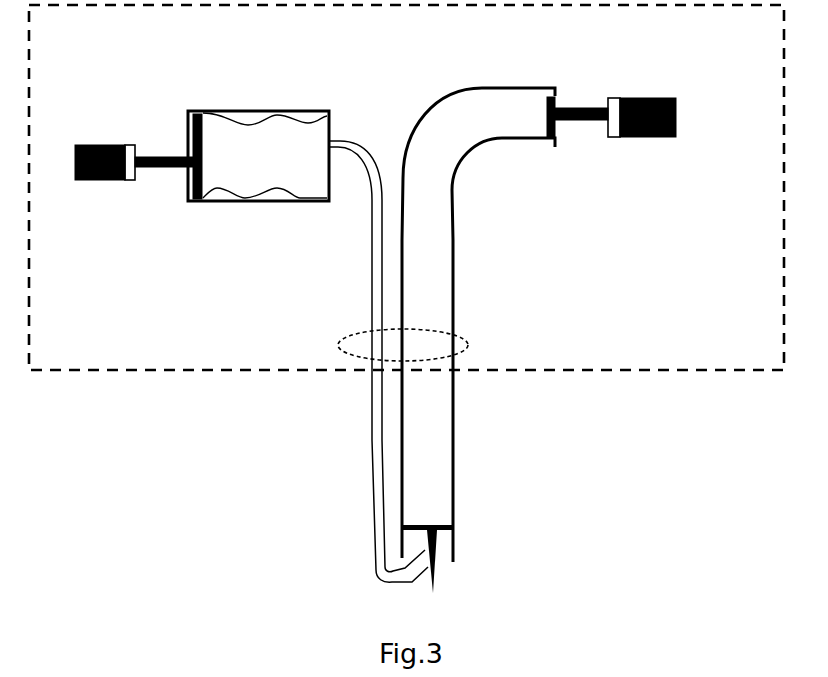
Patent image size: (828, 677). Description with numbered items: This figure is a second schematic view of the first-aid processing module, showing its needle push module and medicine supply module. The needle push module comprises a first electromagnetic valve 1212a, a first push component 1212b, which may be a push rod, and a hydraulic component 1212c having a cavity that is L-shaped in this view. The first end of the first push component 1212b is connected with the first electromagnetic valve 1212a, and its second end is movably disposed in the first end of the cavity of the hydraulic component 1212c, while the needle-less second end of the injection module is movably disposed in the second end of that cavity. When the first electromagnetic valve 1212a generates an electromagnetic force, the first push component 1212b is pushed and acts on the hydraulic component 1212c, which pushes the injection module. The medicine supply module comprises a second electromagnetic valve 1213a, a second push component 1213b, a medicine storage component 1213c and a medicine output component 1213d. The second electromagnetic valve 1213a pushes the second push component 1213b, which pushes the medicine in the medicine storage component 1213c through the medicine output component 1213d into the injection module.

The second electromagnetic valve 1213a is at (105, 142).
The second push component 1213b is at (163, 170).
The medicine storage component 1213c is at (233, 105).
The medicine output component 1213d is at (353, 200).
The first electromagnetic valve 1212a is at (638, 148).
The first push component 1212b is at (577, 105).
The hydraulic component 1212c is at (455, 82).